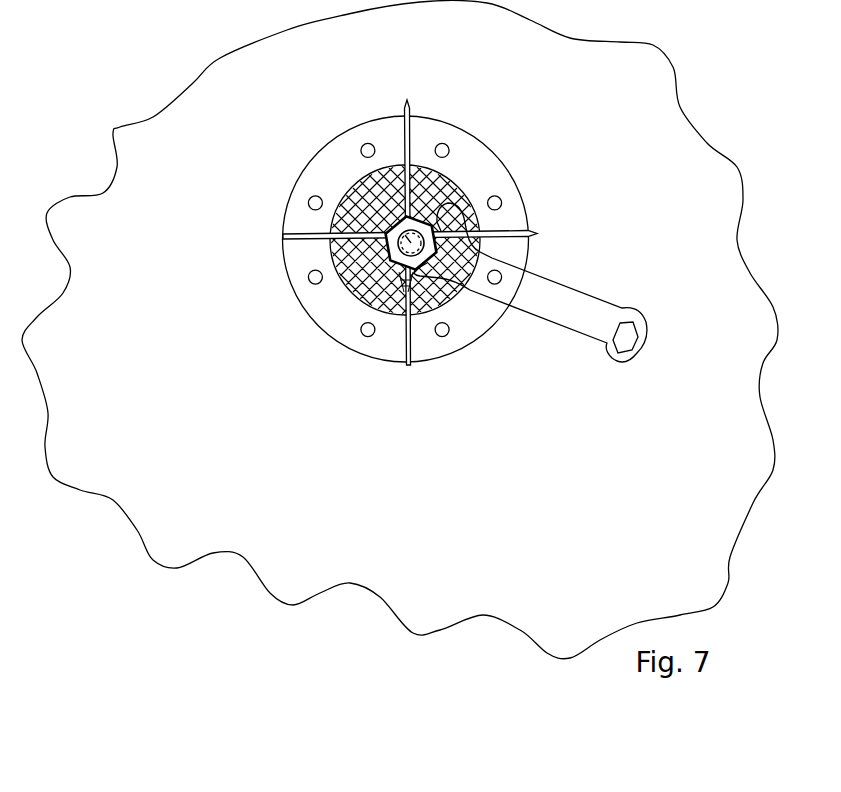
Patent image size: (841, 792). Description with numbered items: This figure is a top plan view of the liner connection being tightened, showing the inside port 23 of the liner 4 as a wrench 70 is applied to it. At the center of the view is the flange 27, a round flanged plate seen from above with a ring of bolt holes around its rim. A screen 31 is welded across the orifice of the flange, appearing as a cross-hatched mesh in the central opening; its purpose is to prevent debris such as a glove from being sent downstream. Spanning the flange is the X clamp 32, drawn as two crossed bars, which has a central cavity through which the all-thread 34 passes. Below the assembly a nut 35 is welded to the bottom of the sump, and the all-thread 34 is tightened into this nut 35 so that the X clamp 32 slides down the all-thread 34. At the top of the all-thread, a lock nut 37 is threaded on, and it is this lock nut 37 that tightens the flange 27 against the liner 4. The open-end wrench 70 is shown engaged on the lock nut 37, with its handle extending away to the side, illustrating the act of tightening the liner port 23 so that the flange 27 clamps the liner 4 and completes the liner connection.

The liner 4 is at (154, 151).
The inside port 23 is at (455, 73).
The flange 27 is at (510, 203).
The screen 31 is at (457, 182).
The X clamp 32 is at (410, 143).
The all-thread 34 is at (363, 197).
The nut 35 is at (400, 281).
The lock nut 37 is at (463, 282).
The wrench 70 is at (585, 300).